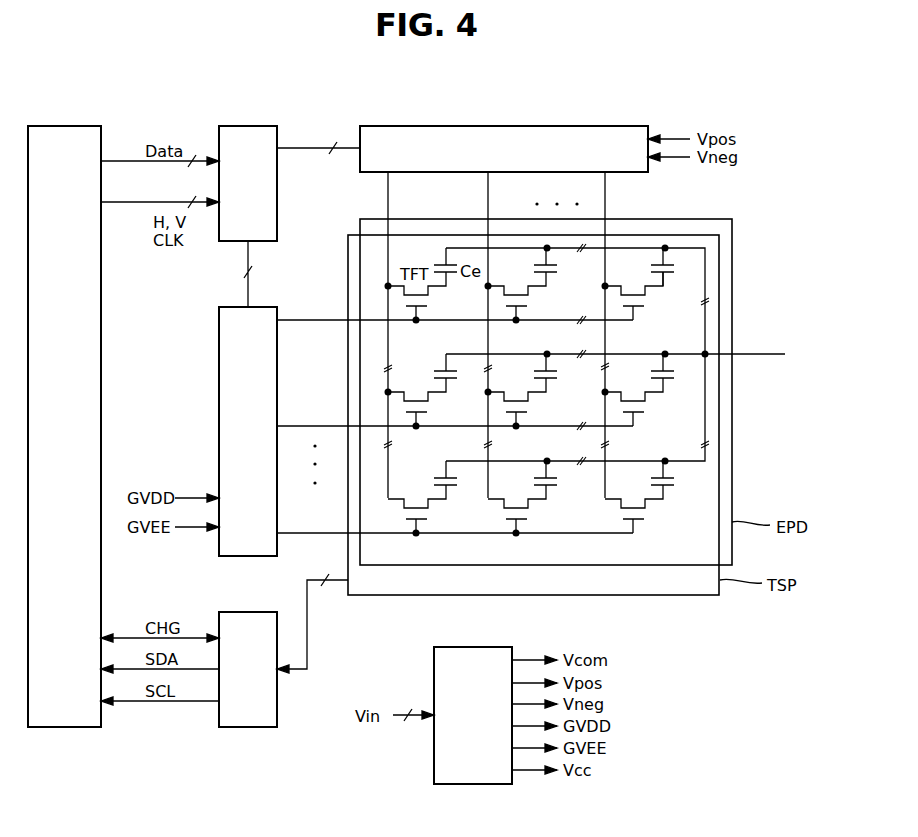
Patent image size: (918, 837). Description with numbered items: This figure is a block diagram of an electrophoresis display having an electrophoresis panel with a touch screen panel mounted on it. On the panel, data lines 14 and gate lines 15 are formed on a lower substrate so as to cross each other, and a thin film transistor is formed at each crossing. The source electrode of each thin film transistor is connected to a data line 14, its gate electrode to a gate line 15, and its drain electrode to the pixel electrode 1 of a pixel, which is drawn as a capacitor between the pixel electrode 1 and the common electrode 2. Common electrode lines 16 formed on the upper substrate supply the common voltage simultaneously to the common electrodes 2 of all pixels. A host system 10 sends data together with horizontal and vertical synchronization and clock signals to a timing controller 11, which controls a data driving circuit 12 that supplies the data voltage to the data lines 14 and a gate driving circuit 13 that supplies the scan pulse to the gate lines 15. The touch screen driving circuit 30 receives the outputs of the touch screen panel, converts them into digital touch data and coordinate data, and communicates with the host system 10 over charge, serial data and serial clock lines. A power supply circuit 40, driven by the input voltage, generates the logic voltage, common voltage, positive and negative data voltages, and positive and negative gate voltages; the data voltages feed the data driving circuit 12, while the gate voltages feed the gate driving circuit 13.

The host system 10 is at (64, 426).
The timing controller 11 is at (248, 183).
The data driving circuit 12 is at (504, 149).
The gate driving circuit 13 is at (248, 431).
The data lines 14 is at (388, 200).
The gate lines 15 is at (328, 322).
The common electrode lines 16 is at (697, 247).
The pixel electrode 1 is at (676, 274).
The common electrode 2 is at (676, 258).
The touch screen driving circuit 30 is at (248, 669).
The power supply circuit 40 is at (473, 715).